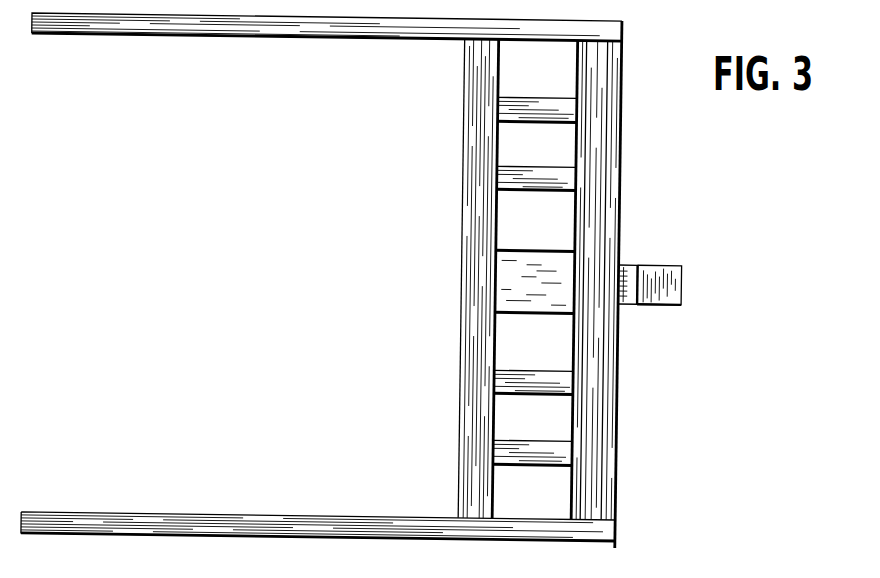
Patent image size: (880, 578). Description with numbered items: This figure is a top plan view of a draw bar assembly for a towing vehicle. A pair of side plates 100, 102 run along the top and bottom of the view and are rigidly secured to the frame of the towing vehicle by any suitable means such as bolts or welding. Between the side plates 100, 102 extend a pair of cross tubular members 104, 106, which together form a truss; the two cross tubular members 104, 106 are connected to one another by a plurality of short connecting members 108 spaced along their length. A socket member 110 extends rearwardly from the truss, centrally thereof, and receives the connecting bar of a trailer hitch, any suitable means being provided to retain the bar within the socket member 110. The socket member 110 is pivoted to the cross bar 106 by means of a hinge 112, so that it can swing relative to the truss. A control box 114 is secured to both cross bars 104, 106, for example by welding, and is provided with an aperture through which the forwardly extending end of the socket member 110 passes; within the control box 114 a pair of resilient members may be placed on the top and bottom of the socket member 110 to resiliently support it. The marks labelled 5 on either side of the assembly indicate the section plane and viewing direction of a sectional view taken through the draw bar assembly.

The side plate 100 is at (268, 33).
The side plate 102 is at (212, 514).
The cross tubular member 104 is at (478, 173).
The cross tubular member 106 is at (610, 120).
The short connecting member 108 is at (540, 102).
The socket member 110 is at (672, 280).
The hinge 112 is at (630, 275).
The control box 114 is at (505, 278).
The section line 5- 5 is at (369, 295).